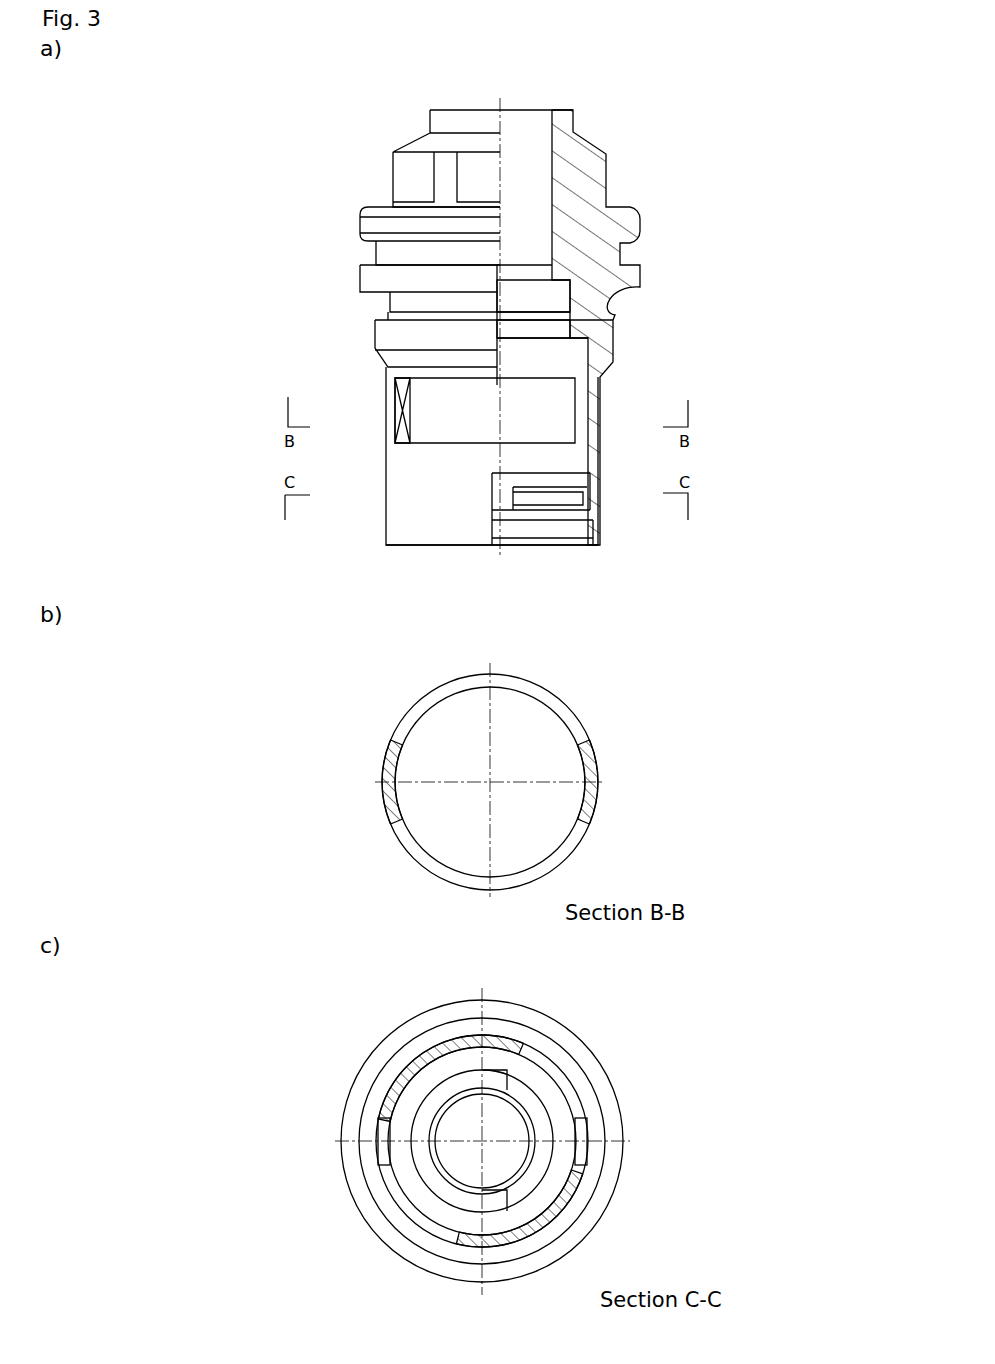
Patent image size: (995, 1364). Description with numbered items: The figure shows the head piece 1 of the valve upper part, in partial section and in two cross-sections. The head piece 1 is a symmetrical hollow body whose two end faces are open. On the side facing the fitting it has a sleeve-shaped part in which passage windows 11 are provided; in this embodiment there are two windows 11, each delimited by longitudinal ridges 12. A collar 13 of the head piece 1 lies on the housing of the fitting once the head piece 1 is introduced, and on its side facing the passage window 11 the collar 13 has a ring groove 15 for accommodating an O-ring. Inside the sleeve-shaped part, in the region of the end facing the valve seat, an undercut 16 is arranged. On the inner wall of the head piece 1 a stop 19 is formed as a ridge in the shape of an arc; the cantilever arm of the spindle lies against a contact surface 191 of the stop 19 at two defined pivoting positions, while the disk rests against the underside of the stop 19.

The head piece 1 is at (500, 327).
The passage window 11 is at (567, 409).
The longitudinal ridge 12 is at (397, 432).
The collar 13 is at (600, 545).
The ring groove 15 is at (388, 312).
The undercut 16 is at (600, 525).
The stop 19 is at (536, 323).
The contact surface 191 is at (507, 1192).